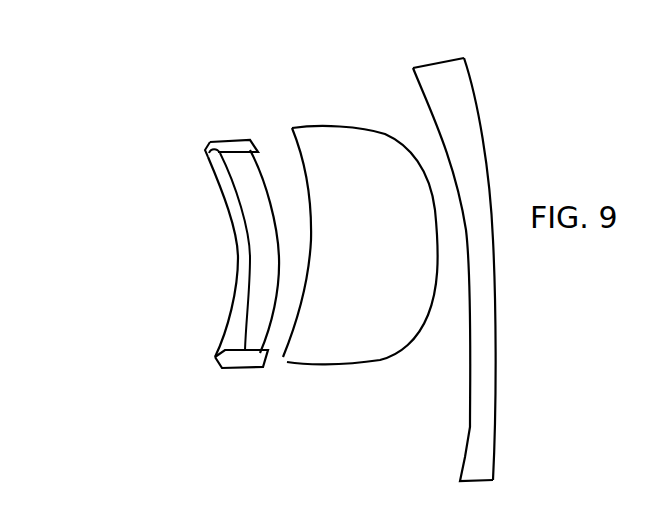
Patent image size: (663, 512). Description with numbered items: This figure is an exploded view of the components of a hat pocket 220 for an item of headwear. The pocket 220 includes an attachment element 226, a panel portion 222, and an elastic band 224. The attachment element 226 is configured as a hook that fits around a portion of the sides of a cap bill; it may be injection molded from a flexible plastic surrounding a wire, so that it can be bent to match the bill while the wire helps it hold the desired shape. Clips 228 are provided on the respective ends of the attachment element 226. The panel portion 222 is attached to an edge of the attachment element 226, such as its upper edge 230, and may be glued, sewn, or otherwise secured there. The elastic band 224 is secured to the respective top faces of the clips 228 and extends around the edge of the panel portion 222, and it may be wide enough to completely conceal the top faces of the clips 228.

The pocket 220 is at (155, 134).
The panel portion 222 is at (332, 122).
The elastic band 224 is at (485, 118).
The attachment element 226 is at (237, 270).
The clips 228 is at (233, 142).
The upper edge 230 is at (261, 213).